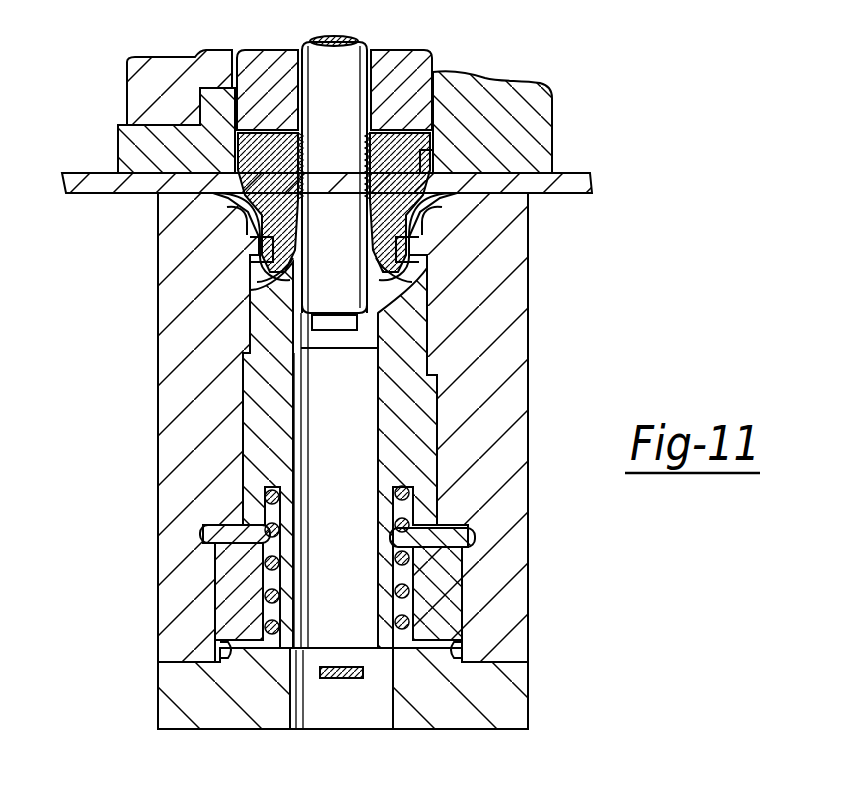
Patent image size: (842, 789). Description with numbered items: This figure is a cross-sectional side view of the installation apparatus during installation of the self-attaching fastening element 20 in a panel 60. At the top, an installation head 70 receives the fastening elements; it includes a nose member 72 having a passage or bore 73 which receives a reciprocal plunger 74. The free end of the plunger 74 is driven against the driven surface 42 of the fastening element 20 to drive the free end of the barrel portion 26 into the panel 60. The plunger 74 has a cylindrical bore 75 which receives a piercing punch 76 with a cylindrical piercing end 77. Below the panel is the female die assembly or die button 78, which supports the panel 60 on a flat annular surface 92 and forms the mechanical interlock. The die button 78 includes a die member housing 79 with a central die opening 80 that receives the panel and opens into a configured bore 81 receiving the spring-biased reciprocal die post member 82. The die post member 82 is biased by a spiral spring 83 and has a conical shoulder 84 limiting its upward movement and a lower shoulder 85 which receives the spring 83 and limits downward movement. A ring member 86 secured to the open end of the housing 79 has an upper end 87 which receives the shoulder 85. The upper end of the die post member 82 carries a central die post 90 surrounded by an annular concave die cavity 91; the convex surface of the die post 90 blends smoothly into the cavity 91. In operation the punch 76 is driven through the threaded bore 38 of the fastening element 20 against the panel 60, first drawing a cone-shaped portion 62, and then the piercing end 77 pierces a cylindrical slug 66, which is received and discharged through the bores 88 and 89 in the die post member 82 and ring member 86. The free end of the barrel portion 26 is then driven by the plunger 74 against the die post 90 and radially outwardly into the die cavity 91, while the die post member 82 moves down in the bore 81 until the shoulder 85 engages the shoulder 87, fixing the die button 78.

The fastening element 20 is at (415, 146).
The barrel portion 26 is at (412, 235).
The threaded bore 38 is at (378, 186).
The driven surface 42 is at (297, 133).
The panel 60 is at (568, 194).
The cone-shaped portion 62 is at (262, 243).
The slug 66 is at (343, 680).
The installation head 70 is at (160, 78).
The nose member 72 is at (500, 92).
The passage or bore 73 is at (249, 50).
The plunger 74 is at (403, 63).
The cylindrical bore 75 is at (316, 45).
The piercing punch 76 is at (352, 105).
The cylindrical piercing end 77 is at (338, 332).
The female die assembly 78 is at (108, 336).
The die member housing 79 is at (508, 420).
The central die opening 80 is at (232, 210).
The configured bore 81 is at (243, 355).
The die post member 82 is at (392, 430).
The spiral spring 83 is at (270, 598).
The conical shoulder 84 is at (433, 378).
The lower shoulder 85 is at (248, 500).
The ring member 86 is at (450, 720).
The upper end 87 is at (447, 525).
The bore 88 is at (300, 602).
The bore 89 is at (294, 703).
The central die post 90 is at (258, 303).
The annular concave die cavity 91 is at (430, 300).
The flat annular surface 92 is at (432, 192).